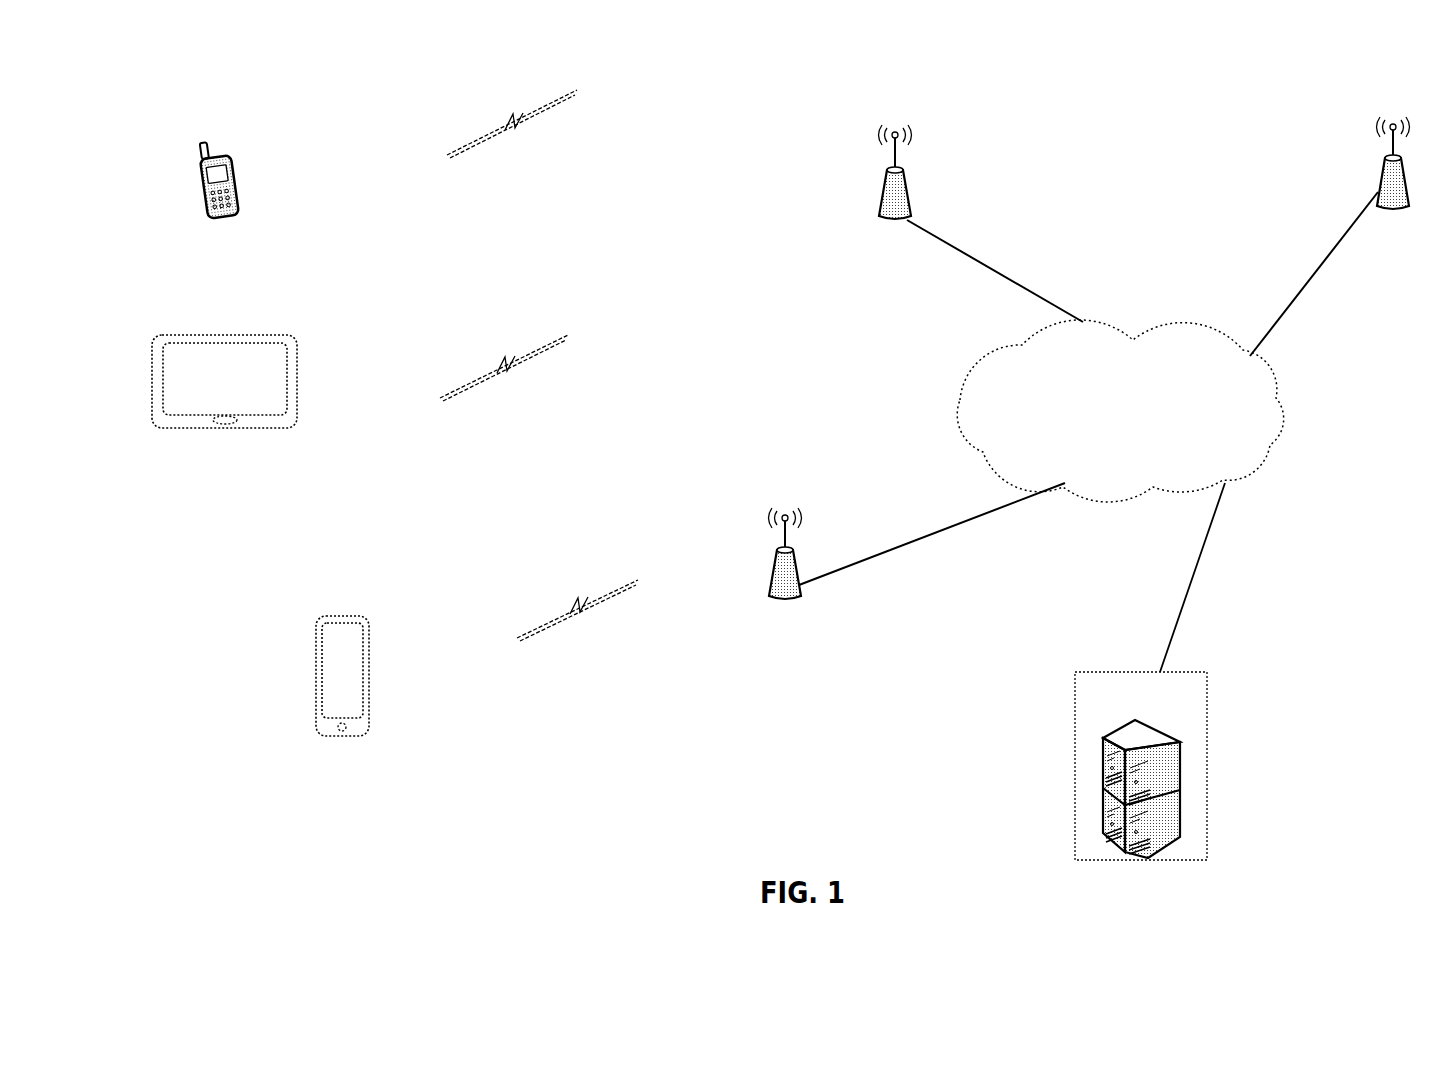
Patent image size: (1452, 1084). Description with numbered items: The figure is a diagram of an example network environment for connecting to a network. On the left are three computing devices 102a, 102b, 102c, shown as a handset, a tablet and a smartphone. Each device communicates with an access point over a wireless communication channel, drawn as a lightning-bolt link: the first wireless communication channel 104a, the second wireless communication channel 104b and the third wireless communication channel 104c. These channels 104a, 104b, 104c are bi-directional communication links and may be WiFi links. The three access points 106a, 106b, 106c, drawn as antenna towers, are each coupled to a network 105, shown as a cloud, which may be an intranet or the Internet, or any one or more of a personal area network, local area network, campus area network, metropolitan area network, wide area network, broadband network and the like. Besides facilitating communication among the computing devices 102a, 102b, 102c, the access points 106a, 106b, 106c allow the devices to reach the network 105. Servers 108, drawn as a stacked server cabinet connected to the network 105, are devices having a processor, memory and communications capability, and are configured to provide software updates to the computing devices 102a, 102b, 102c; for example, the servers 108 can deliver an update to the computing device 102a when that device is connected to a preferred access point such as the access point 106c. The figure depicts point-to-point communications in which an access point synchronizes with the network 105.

The computing device 102a is at (243, 194).
The computing device 102b is at (300, 365).
The computing device 102c is at (372, 662).
The wireless communication channel 104a is at (520, 127).
The wireless communication channel 104b is at (512, 363).
The wireless communication channel 104c is at (600, 598).
The network 105 is at (1120, 496).
The access point 106a is at (979, 223).
The access point 106b is at (1337, 236).
The access point 106c is at (914, 558).
The servers 108 is at (1207, 730).